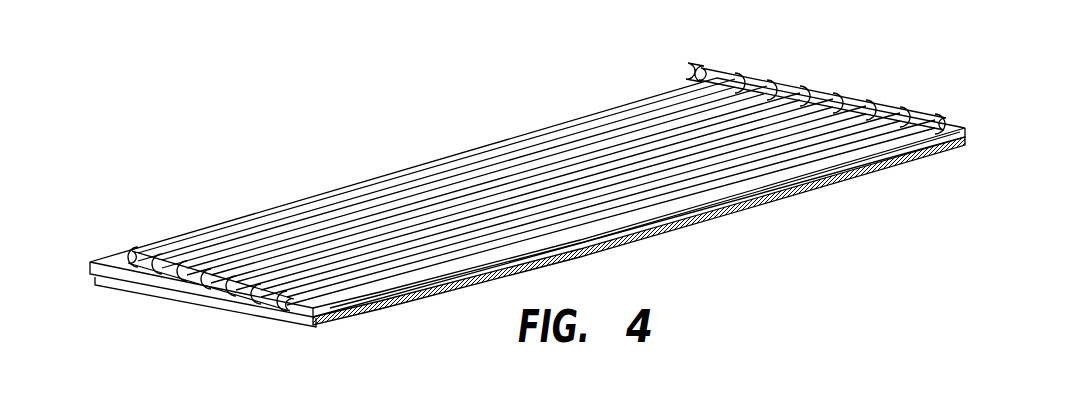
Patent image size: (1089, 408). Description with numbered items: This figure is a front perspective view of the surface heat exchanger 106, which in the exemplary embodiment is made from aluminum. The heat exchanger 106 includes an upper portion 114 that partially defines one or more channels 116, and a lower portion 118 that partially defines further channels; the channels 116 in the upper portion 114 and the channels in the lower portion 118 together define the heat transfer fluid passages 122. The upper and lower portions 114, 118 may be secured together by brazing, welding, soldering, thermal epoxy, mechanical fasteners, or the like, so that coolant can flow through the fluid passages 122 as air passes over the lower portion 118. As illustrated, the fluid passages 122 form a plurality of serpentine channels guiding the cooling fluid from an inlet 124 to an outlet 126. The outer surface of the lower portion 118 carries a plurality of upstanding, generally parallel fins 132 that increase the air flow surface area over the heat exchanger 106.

The surface heat exchanger 106 is at (581, 197).
The upper portion 114 is at (536, 186).
The channels 116 is at (465, 168).
The lower portion 118 is at (527, 197).
The heat transfer fluid passages 122 is at (504, 141).
The inlet 124 is at (695, 62).
The outlet 126 is at (685, 75).
The fins 132 is at (360, 322).